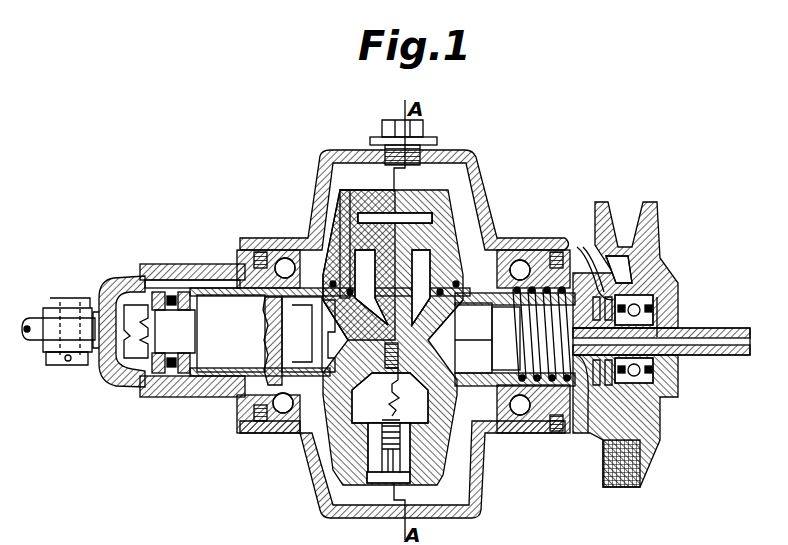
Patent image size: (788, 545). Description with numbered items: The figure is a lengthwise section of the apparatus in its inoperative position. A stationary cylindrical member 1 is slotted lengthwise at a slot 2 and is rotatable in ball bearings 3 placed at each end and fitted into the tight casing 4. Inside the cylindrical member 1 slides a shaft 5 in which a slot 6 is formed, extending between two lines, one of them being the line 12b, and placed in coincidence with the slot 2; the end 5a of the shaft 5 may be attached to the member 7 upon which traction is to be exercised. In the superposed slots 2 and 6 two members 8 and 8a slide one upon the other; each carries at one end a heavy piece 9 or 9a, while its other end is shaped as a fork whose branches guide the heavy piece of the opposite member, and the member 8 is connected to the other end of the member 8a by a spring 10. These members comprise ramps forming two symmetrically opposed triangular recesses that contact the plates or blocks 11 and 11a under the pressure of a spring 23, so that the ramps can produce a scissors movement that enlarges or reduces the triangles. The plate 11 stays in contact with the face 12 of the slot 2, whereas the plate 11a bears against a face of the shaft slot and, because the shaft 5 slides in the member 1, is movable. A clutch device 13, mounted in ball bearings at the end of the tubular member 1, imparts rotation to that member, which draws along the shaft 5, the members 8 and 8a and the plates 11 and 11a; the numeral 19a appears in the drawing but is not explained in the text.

The stationary cylindrical member 1 is at (284, 312).
The slot 2 is at (366, 288).
The ball bearings 3 is at (283, 262).
The tight casing 4 is at (490, 205).
The shaft 5 is at (344, 334).
The end of the shaft 5a is at (144, 331).
The slot 6 is at (365, 330).
The member upon which traction is exercised 7 is at (52, 332).
The sliding member 8 is at (455, 268).
The sliding member 8a is at (346, 215).
The heavy piece 9 is at (430, 200).
The heavy piece 9a is at (425, 490).
The spring 10 is at (468, 436).
The plate 11 is at (322, 342).
The plate 11a is at (451, 357).
The face of the slot 12 is at (337, 334).
The line 12b is at (284, 311).
The clutch device 13 is at (648, 234).
The spring seat 19a is at (546, 310).
The spring 23 is at (553, 336).